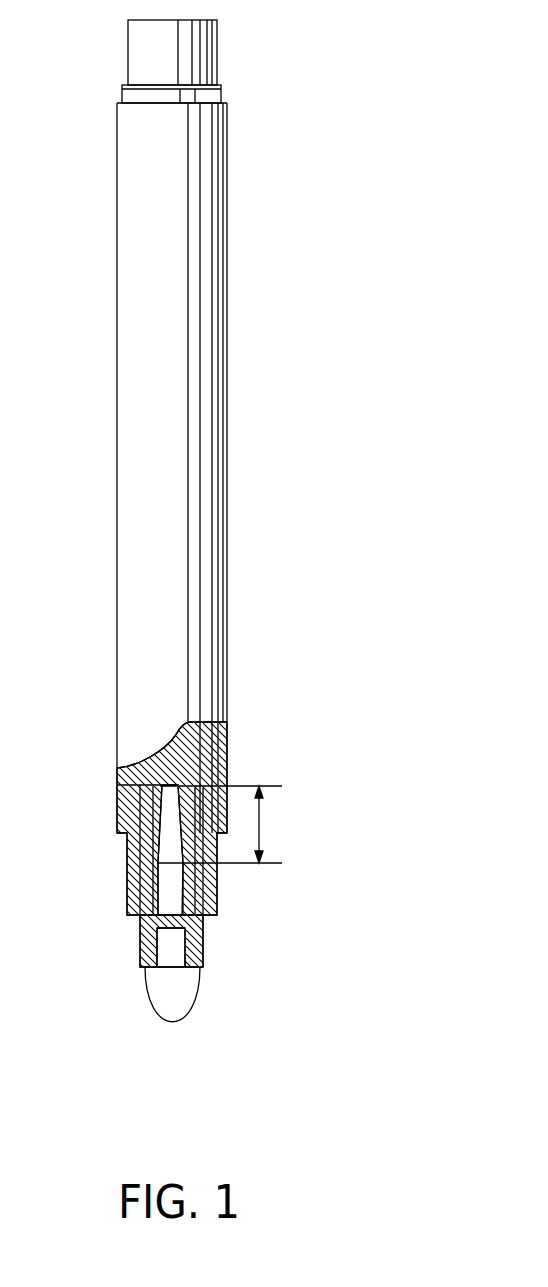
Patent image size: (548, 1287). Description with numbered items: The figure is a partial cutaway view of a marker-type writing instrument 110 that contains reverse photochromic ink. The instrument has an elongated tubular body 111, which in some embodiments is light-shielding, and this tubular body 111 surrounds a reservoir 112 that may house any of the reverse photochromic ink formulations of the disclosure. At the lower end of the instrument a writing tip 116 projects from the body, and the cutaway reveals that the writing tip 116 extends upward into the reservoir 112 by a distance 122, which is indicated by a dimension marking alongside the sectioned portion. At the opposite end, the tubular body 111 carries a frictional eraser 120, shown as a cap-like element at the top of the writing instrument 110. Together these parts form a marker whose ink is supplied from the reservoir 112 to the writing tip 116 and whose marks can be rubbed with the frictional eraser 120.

The writing instrument 110 is at (246, 373).
The tubular body 111 is at (115, 416).
The reservoir 112 is at (180, 750).
The writing tip 116 is at (160, 985).
The frictional eraser 120 is at (147, 60).
The distance 122 is at (266, 825).